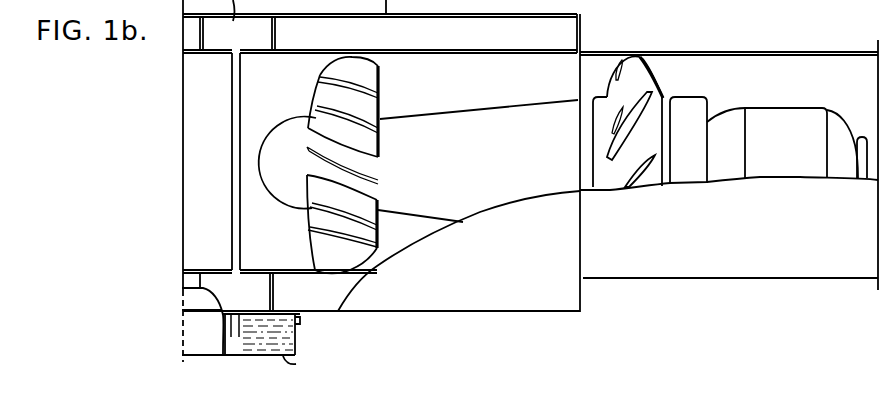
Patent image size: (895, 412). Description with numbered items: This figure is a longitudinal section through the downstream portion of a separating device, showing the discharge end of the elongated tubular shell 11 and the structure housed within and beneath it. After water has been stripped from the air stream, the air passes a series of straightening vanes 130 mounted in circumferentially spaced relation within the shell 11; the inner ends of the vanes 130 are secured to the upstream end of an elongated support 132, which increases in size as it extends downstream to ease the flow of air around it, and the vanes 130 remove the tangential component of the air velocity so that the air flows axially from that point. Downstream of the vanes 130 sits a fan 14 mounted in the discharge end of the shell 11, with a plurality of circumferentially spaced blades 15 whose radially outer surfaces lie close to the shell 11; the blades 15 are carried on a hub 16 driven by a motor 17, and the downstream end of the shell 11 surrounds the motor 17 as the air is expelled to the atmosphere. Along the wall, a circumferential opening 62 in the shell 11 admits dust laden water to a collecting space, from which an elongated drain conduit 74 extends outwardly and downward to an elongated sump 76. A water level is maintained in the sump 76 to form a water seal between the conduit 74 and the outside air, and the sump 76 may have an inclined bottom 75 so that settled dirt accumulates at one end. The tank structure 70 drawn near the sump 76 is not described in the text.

The tubular shell 11 is at (473, 316).
The fan 14 is at (707, 100).
The blades 15 is at (640, 65).
The hub 16 is at (593, 115).
The motor 17 is at (791, 117).
The circumferential openings 62 is at (233, 88).
The reservoir tank 70 is at (297, 340).
The drain conduits 74 is at (235, 321).
The inclined bottom 75 is at (296, 364).
The sump 76 is at (192, 340).
The straightening vanes 130 is at (366, 136).
The support 132 is at (279, 128).